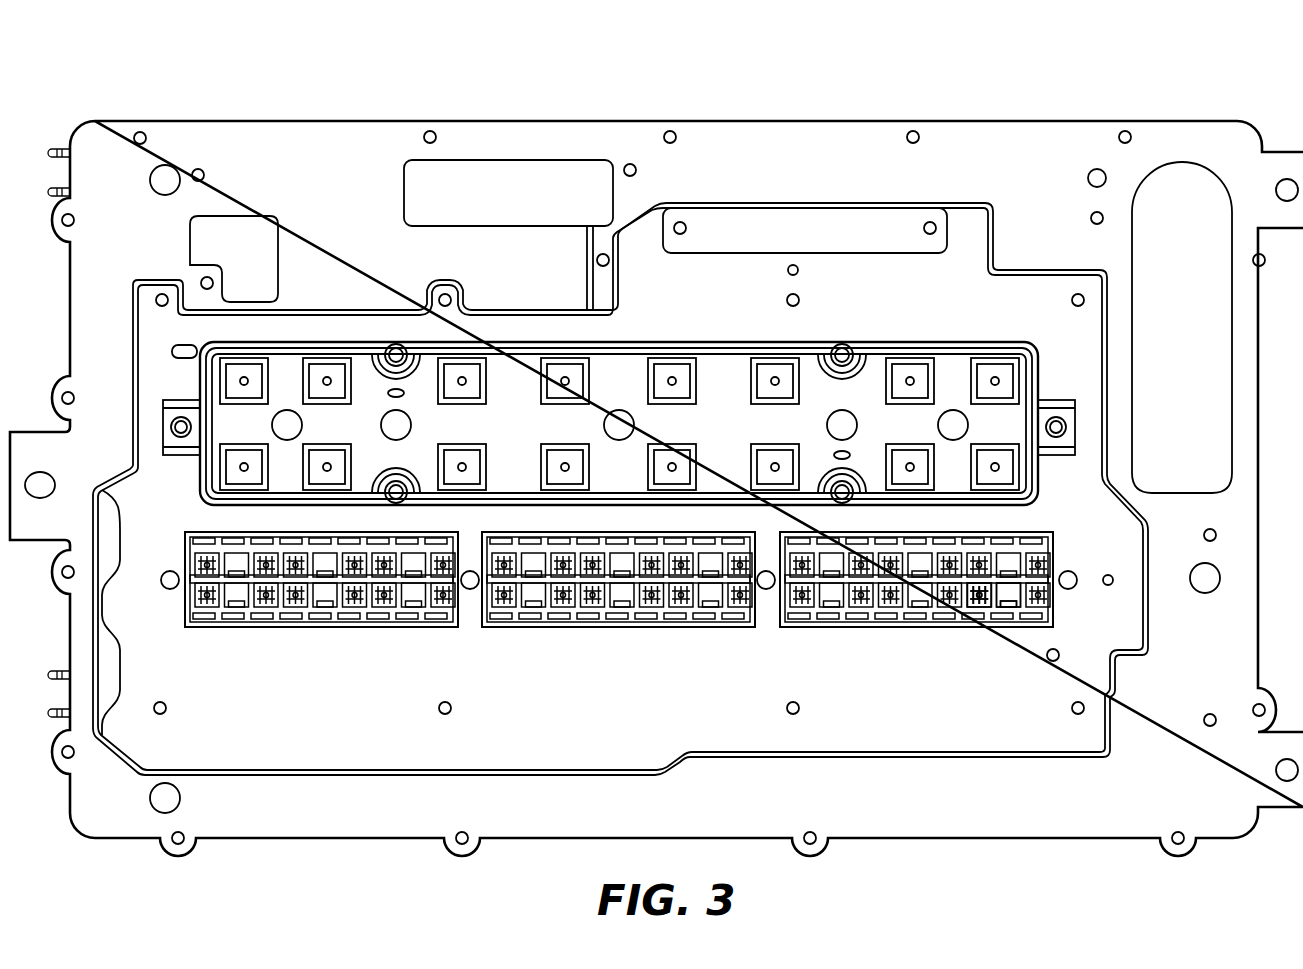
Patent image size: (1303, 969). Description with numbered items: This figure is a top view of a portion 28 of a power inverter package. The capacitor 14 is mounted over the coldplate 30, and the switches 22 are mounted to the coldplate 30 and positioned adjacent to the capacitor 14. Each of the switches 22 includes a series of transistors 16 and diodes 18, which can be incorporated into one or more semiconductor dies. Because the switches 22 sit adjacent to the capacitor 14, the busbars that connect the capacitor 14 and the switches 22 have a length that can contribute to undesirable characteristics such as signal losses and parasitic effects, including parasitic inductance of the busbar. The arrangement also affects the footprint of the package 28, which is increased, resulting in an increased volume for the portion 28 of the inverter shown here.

The portion 28 is at (1015, 66).
The capacitor 14 is at (872, 385).
The switches 22 is at (324, 636).
The transistors 16 is at (978, 608).
The diodes 18 is at (1010, 600).
The coldplate 30 is at (726, 722).